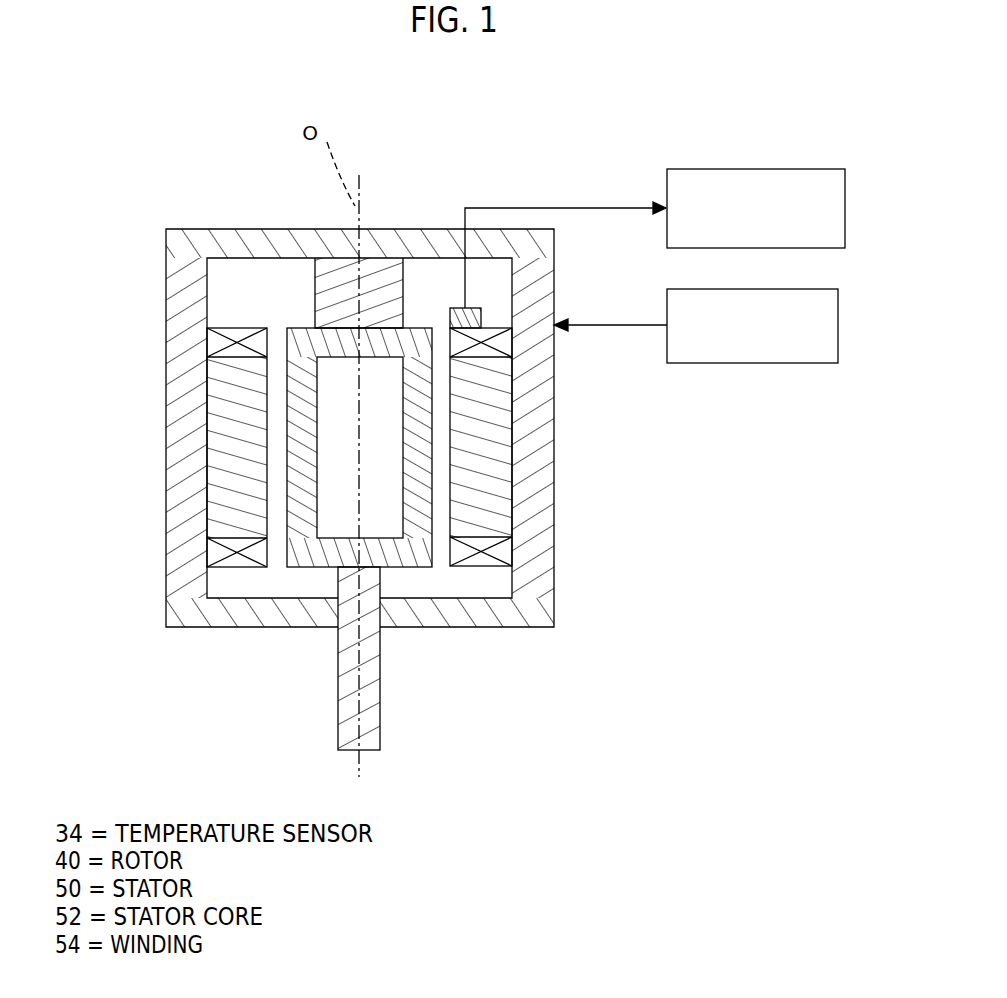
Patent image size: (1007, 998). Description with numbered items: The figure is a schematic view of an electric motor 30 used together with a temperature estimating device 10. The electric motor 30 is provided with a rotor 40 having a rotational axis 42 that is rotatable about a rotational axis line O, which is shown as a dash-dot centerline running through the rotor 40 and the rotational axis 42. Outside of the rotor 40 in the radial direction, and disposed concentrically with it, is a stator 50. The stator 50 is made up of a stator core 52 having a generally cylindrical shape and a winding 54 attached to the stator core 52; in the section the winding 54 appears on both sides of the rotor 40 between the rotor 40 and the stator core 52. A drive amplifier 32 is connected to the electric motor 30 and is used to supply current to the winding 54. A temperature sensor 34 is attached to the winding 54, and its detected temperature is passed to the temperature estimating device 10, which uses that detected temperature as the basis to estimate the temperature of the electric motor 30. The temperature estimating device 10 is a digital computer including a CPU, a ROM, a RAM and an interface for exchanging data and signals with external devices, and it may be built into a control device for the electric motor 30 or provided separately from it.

The temperature estimating device 10 is at (799, 168).
The electric motor 30 is at (183, 206).
The drive amplifier 32 is at (813, 363).
The temperature sensor 34 is at (482, 317).
The rotor 40 is at (312, 568).
The rotational axis 42 is at (380, 705).
The stator 50 is at (483, 569).
The stator core 52 is at (497, 483).
The winding 54 is at (497, 342).